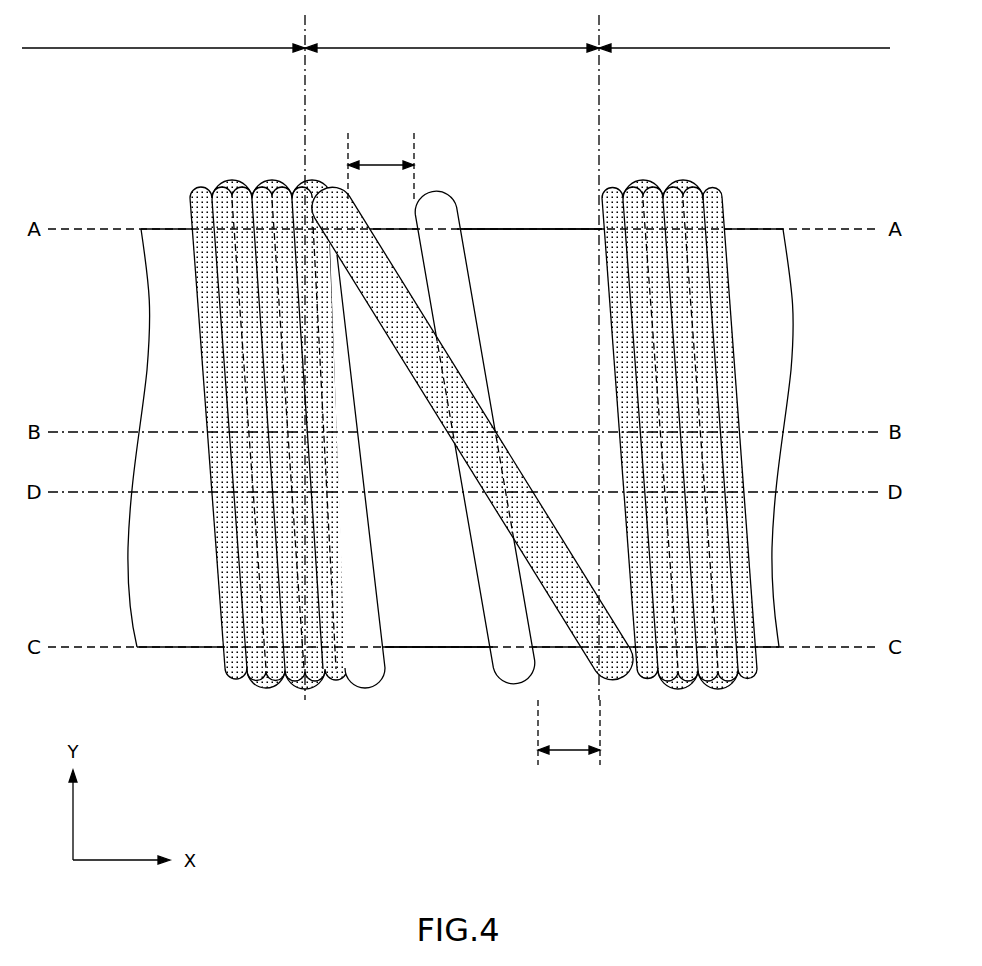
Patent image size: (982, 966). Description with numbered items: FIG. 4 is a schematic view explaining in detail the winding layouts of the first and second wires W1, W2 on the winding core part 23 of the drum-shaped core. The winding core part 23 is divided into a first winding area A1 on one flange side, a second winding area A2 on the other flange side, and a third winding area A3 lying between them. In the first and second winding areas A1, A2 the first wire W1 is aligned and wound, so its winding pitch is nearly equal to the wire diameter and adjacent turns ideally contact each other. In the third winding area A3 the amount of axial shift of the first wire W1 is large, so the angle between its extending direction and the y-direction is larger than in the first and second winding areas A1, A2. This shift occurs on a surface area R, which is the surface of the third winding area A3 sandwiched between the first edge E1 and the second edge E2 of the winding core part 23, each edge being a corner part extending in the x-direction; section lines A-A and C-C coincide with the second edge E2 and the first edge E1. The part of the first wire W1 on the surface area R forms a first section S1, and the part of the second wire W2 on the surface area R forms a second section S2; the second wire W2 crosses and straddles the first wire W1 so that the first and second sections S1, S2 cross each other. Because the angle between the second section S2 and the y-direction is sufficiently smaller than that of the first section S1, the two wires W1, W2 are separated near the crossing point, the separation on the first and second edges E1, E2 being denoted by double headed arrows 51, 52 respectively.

The winding core part 23 is at (770, 309).
The double headed arrow 51 is at (569, 741).
The double headed arrow 52 is at (381, 166).
The first wire W1 is at (195, 186).
The second wire W2 is at (243, 396).
The first edge E1 is at (432, 652).
The second edge E2 is at (489, 229).
The surface area R is at (541, 240).
The first section S1 is at (412, 378).
The second section S2 is at (480, 322).
The first winding area A1 is at (744, 35).
The second winding area A2 is at (163, 35).
The third winding area A3 is at (452, 35).